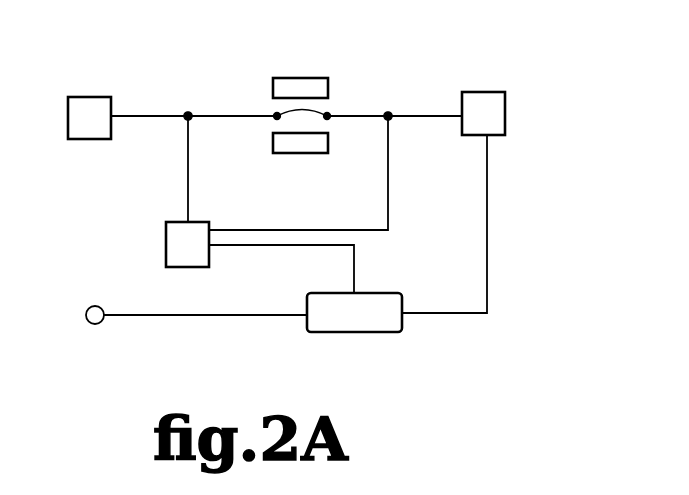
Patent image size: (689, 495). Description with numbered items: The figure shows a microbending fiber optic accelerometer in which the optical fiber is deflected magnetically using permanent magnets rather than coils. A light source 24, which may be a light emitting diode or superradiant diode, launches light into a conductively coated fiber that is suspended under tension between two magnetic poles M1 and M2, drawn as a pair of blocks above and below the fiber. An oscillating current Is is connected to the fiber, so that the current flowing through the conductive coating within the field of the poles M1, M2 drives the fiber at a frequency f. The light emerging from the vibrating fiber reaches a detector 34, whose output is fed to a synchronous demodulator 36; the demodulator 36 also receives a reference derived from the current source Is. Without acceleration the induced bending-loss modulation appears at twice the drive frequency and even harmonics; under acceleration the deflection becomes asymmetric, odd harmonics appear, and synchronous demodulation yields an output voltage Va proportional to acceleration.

The light source 24 is at (90, 134).
The detector 34 is at (503, 111).
The synchronous demodulator 36 is at (382, 329).
The magnetic pole M1 is at (320, 79).
The magnetic pole M2 is at (308, 150).
The oscillating current Is is at (187, 244).
The signal output voltage Va is at (72, 318).